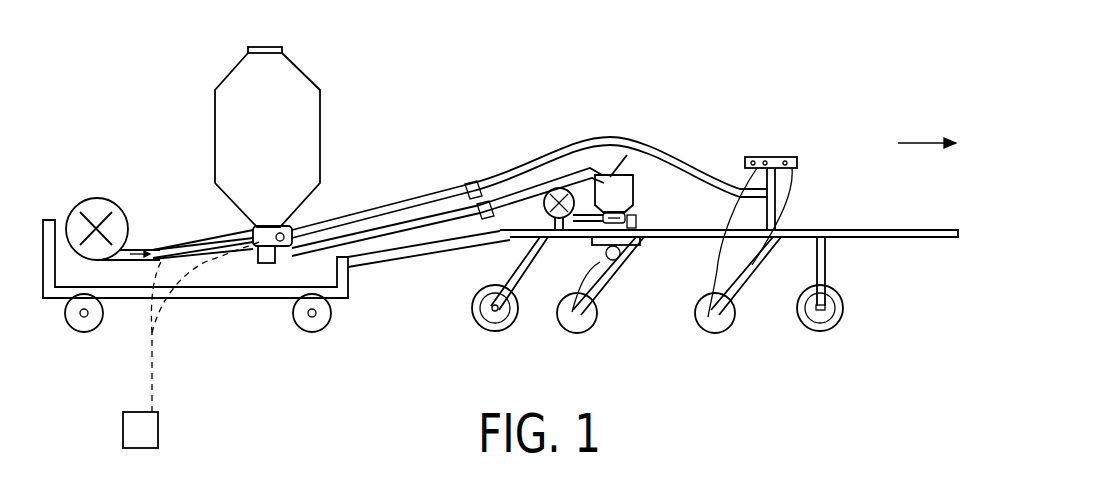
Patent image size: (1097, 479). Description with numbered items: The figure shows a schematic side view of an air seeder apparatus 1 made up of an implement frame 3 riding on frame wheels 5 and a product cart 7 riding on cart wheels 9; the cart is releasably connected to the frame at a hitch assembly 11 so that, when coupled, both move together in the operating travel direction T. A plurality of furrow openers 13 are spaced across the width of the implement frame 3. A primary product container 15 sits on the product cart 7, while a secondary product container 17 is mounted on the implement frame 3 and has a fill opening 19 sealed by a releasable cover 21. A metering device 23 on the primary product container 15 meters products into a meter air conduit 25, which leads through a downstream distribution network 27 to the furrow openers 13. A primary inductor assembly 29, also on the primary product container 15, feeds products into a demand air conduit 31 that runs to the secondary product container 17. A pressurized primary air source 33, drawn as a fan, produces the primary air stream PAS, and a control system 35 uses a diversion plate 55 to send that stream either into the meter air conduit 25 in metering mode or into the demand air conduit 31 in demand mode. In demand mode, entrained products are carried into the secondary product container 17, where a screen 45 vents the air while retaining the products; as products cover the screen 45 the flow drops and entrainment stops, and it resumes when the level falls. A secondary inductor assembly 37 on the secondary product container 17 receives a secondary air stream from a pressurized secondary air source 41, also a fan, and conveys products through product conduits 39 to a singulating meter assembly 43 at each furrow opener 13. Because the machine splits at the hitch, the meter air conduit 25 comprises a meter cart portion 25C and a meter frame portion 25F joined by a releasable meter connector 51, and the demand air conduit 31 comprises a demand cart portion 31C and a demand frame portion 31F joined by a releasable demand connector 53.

The apparatus 1 is at (500, 239).
The implement frame 3 is at (810, 230).
The frame wheels 5 is at (845, 304).
The product cart 7 is at (185, 300).
The cart wheels 9 is at (83, 332).
The hitch assembly 11 is at (487, 248).
The furrow openers 13 is at (742, 287).
The primary product container 15 is at (317, 84).
The secondary product container 17 is at (667, 167).
The fill opening 19 is at (636, 190).
The releasable cover 21 is at (613, 170).
The metering device 23 is at (287, 230).
The meter air conduit 25 is at (218, 233).
The meter cart portion 25C is at (385, 207).
The meter frame portion 25F is at (497, 165).
The downstream distribution network 27 is at (778, 158).
The primary inductor assembly 29 is at (267, 267).
The demand air conduit 31 is at (230, 263).
The demand cart portion 31C is at (380, 245).
The demand frame portion 31F is at (550, 170).
The pressurized primary air source 33 is at (72, 212).
The control system 35 is at (159, 430).
The secondary inductor assembly 37 is at (603, 222).
The product conduits 39 is at (640, 222).
The pressurized secondary air source 41 is at (507, 173).
The singulating meter assembly 43 is at (620, 262).
The screen 45 is at (577, 191).
The releasable meter connector 51 is at (470, 177).
The releasable demand connector 53 is at (478, 212).
The diversion plate 55 is at (163, 252).
The primary air stream PAS is at (132, 257).
The operating travel direction T is at (927, 133).